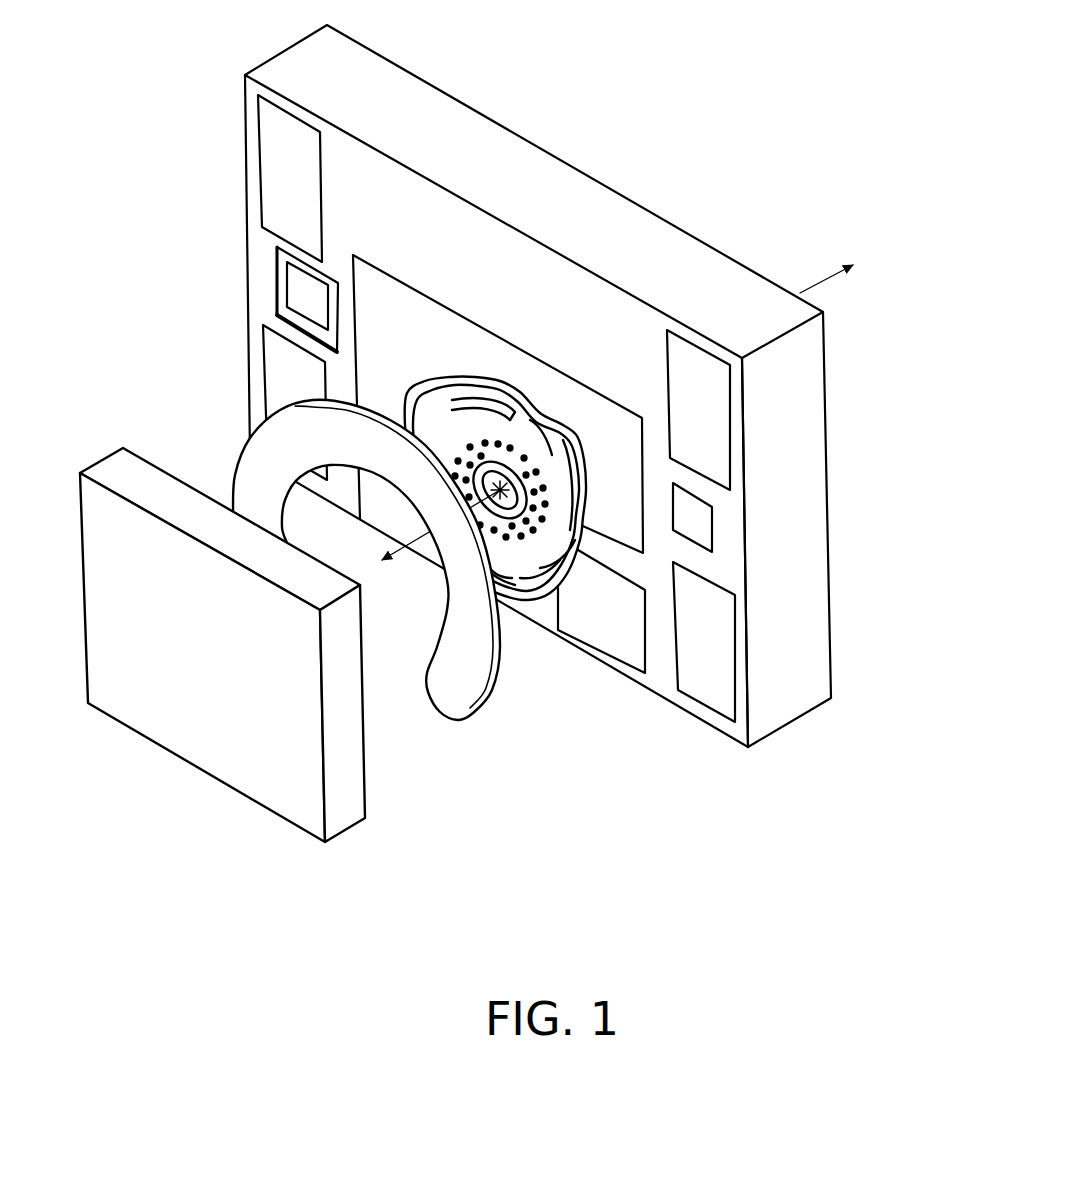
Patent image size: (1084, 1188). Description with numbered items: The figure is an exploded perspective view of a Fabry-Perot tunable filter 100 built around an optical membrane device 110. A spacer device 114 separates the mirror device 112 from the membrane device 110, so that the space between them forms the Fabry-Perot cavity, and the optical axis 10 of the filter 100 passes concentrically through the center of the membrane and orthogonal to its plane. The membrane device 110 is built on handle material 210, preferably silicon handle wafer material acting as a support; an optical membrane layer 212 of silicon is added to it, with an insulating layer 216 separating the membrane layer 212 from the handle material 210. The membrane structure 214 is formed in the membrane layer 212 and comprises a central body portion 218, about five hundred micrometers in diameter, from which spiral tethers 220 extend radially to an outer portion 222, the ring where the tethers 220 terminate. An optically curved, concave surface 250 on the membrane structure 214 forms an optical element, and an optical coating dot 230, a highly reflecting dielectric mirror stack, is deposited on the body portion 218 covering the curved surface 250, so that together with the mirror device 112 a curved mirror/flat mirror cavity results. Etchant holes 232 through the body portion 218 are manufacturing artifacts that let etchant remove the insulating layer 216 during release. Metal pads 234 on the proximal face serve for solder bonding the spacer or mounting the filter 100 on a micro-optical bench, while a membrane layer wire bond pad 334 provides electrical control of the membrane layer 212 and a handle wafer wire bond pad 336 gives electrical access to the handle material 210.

The Fabry-Perot tunable filter 100 is at (588, 75).
The optical axis 10 is at (440, 430).
The optical membrane device 110 is at (828, 340).
The handle material 210 is at (815, 390).
The insulating layer 216 is at (745, 452).
The membrane layer wire bond pad 334 is at (713, 529).
The metal pads 234 is at (588, 631).
The handle wafer wire bond pad 336 is at (275, 290).
The tethers 220 is at (485, 400).
The body portion 218 is at (515, 423).
The membrane structure 214 is at (465, 387).
The optical coating dot 230 is at (550, 440).
The etchant holes 232 is at (535, 480).
The optically curved surface 250 is at (548, 508).
The optical membrane layer 212 is at (538, 603).
The outer portion 222 is at (563, 593).
The spacer device 114 is at (475, 715).
The mirror device 112 is at (367, 800).